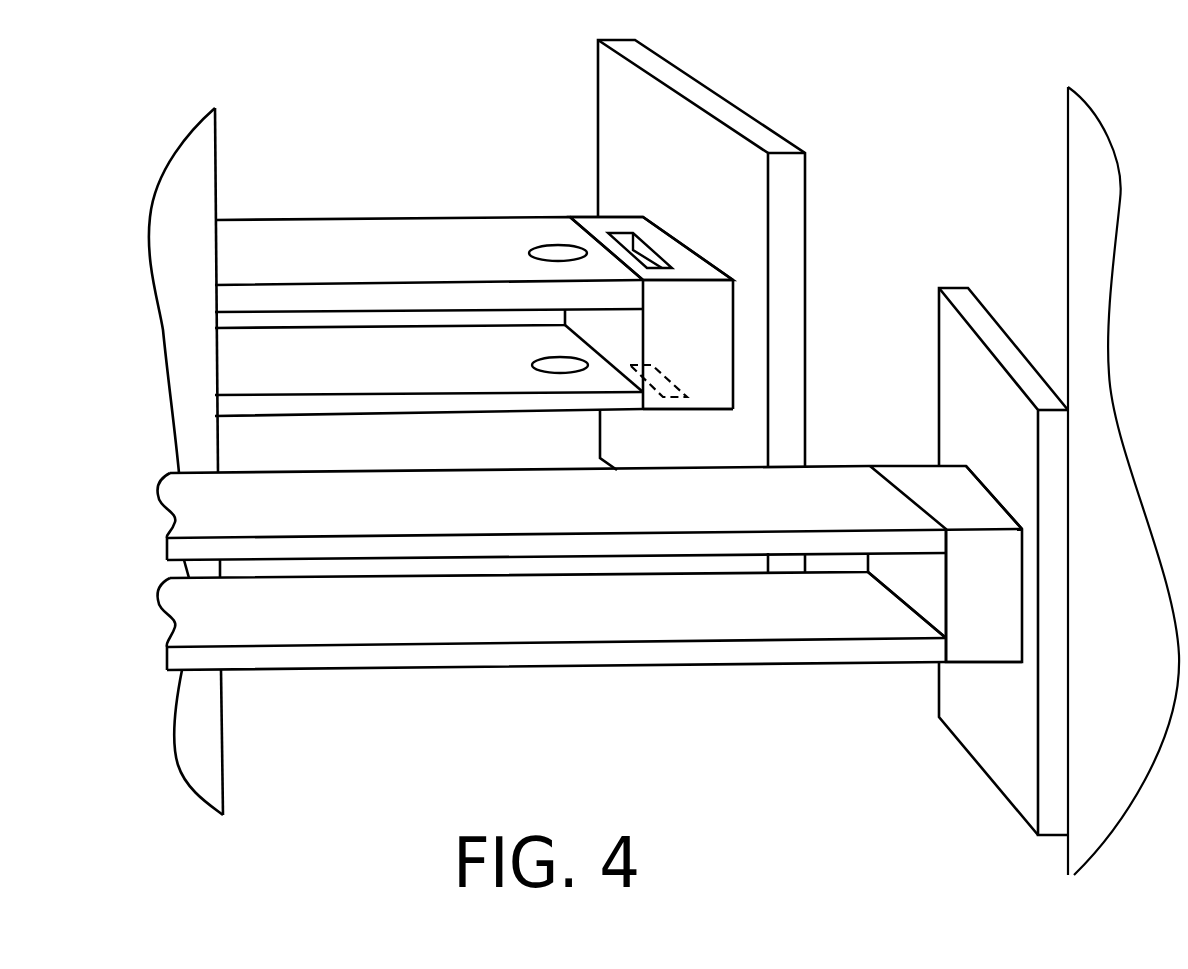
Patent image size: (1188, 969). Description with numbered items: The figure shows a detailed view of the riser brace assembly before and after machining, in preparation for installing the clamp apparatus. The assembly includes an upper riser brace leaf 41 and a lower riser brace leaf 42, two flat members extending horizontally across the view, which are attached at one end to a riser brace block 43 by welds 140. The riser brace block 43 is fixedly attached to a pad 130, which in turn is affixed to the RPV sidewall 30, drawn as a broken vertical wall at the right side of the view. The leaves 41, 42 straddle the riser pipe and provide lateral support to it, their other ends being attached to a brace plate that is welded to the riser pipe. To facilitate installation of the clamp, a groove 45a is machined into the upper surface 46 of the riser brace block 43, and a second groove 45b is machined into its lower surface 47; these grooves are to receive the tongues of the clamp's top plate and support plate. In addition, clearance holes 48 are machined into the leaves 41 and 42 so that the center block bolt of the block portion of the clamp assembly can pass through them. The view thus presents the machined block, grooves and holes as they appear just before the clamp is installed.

The RPV sidewall 30 is at (980, 293).
The upper riser brace leaf 41 is at (347, 548).
The lower riser brace leaf 42 is at (493, 655).
The riser brace block 43 is at (733, 322).
The groove 45a is at (627, 229).
The groove 45b is at (675, 398).
The upper surface 46 is at (697, 255).
The lower surface 47 is at (724, 420).
The clearance holes 48 is at (532, 365).
The pad 130 is at (938, 295).
The welds 140 is at (938, 542).